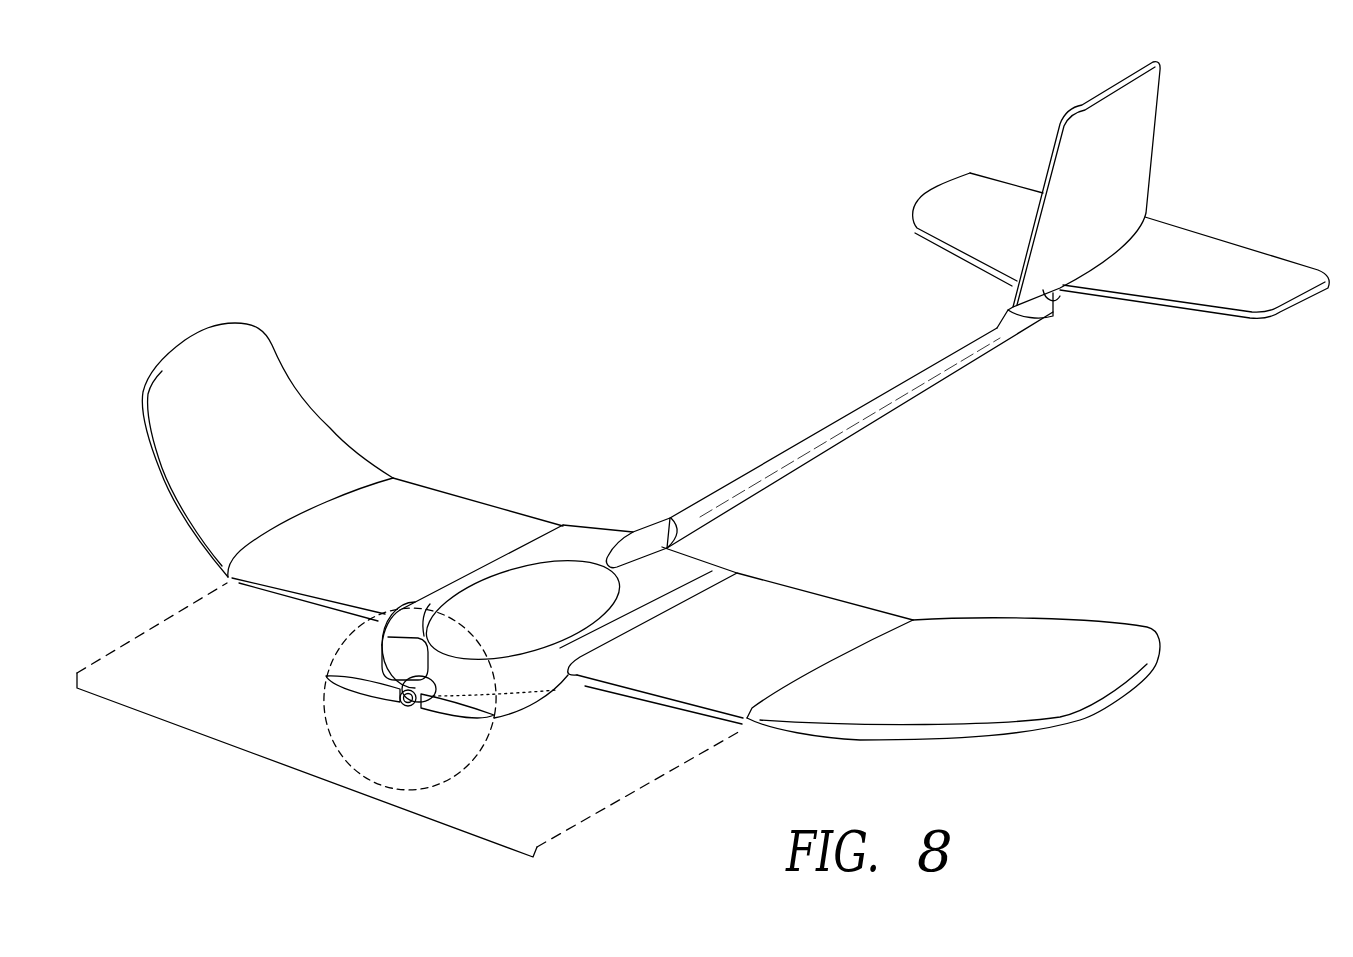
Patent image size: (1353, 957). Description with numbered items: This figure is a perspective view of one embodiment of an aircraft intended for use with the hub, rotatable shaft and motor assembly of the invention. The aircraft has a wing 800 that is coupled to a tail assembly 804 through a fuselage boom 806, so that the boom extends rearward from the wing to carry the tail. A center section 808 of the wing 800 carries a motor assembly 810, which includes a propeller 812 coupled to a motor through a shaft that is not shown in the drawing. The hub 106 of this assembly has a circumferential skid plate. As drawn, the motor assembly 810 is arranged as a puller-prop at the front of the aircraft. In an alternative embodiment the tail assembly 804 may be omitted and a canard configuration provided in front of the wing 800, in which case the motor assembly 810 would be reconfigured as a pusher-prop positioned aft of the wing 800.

The wing 800 is at (608, 685).
The tail assembly 804 is at (1191, 178).
The fuselage boom 806 is at (823, 430).
The center section 808 is at (300, 770).
The motor assembly 810 is at (526, 571).
The propeller 812 is at (363, 690).
The hub 106 is at (388, 637).